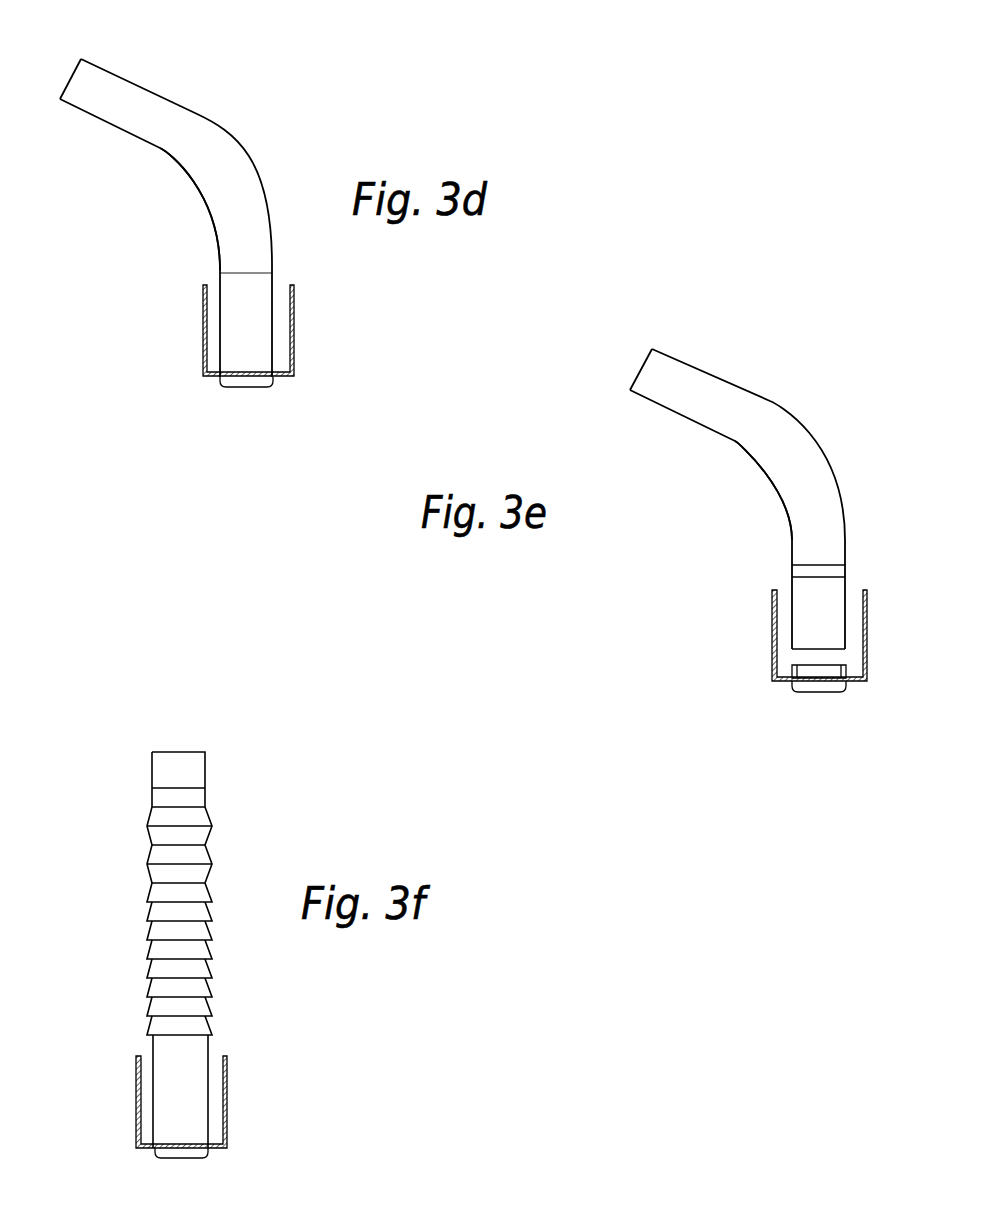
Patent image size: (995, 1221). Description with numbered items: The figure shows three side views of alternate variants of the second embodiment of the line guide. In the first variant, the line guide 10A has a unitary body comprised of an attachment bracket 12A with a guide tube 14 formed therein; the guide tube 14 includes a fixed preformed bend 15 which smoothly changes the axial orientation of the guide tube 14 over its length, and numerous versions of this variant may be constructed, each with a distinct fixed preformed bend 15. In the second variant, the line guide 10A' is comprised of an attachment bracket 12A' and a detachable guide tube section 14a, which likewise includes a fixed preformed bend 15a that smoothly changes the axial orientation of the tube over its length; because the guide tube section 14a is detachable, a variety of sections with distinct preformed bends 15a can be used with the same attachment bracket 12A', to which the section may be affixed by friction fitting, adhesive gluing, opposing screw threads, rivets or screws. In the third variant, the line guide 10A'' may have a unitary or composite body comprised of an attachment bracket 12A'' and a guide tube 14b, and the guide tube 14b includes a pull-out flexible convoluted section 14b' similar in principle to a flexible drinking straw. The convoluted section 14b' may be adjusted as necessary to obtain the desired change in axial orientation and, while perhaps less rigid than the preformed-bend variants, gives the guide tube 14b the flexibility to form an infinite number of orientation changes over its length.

In FIG. 3D, the line guide 10A is at (283, 77).
In FIG. 3D, the guide tube 14 is at (221, 170).
In FIG. 3D, the fixed preformed bend 15 is at (177, 162).
In FIG. 3D, the attachment bracket 12A is at (190, 330).
In FIG. 3E, the line guide 10A' is at (862, 378).
In FIG. 3E, the detachable guide tube section 14a is at (803, 456).
In FIG. 3E, the fixed preformed bend 15a is at (750, 456).
In FIG. 3E, the attachment bracket 12A' is at (757, 635).
In FIG. 3F, the line guide 10A'' is at (300, 770).
In FIG. 3F, the guide tube 14b is at (235, 955).
In FIG. 3F, the pull-out flexible convoluted section 14b' is at (114, 916).
In FIG. 3F, the attachment bracket 12A'' is at (122, 1102).